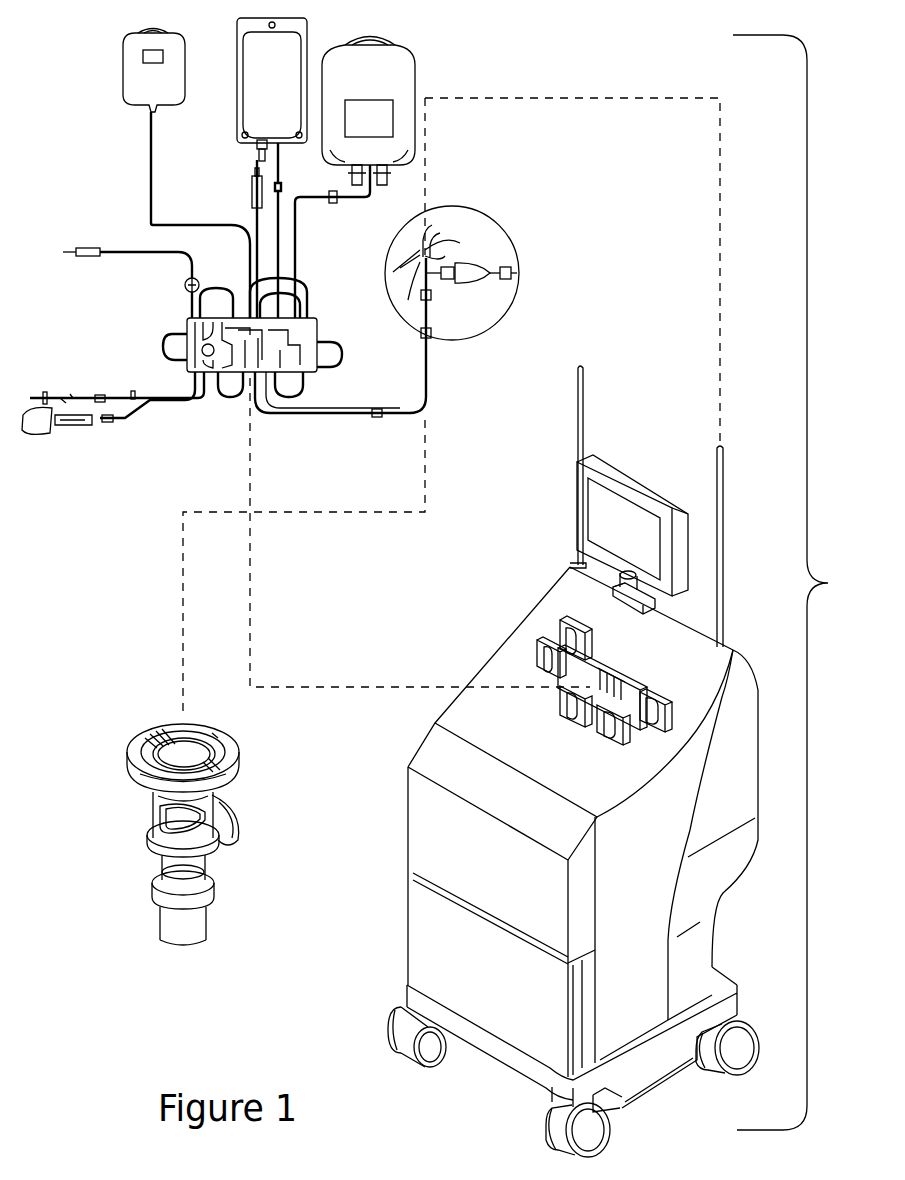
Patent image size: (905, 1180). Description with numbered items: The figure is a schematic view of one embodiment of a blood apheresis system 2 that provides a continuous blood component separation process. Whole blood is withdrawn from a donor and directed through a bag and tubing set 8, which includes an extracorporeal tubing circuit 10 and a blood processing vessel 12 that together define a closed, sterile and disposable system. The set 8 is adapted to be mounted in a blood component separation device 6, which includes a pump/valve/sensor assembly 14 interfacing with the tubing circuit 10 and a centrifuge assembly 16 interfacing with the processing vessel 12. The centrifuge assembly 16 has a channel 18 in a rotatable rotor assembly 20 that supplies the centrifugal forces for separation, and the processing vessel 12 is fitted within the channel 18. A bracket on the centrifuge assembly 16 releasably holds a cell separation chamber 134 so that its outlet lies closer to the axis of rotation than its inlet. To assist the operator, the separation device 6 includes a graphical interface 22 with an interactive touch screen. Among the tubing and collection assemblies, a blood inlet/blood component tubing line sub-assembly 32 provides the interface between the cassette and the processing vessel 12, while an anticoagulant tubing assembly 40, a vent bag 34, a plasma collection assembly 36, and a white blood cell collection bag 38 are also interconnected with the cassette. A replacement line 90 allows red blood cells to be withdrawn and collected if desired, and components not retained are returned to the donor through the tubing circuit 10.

The blood apheresis system 2 is at (828, 583).
The blood component separation device 6 is at (402, 903).
The bag and tubing set 8 is at (97, 357).
The extracorporeal tubing circuit 10 is at (165, 286).
The blood processing vessel 12 is at (498, 273).
The pump/valve/sensor assembly 14 is at (528, 667).
The centrifuge assembly 16 is at (165, 788).
The channel 18 is at (210, 768).
The rotatable rotor assembly 20 is at (141, 830).
The graphical interface 22 is at (613, 523).
The blood inlet/blood component tubing line sub-assembly 32 is at (337, 418).
The vent bag 34 is at (122, 55).
The plasma collection assembly 36 is at (310, 35).
The white blood cell collection bag 38 is at (415, 32).
The anticoagulant tubing assembly 40 is at (85, 257).
The replacement line 90 is at (254, 190).
The cell separation chamber 134 is at (467, 283).